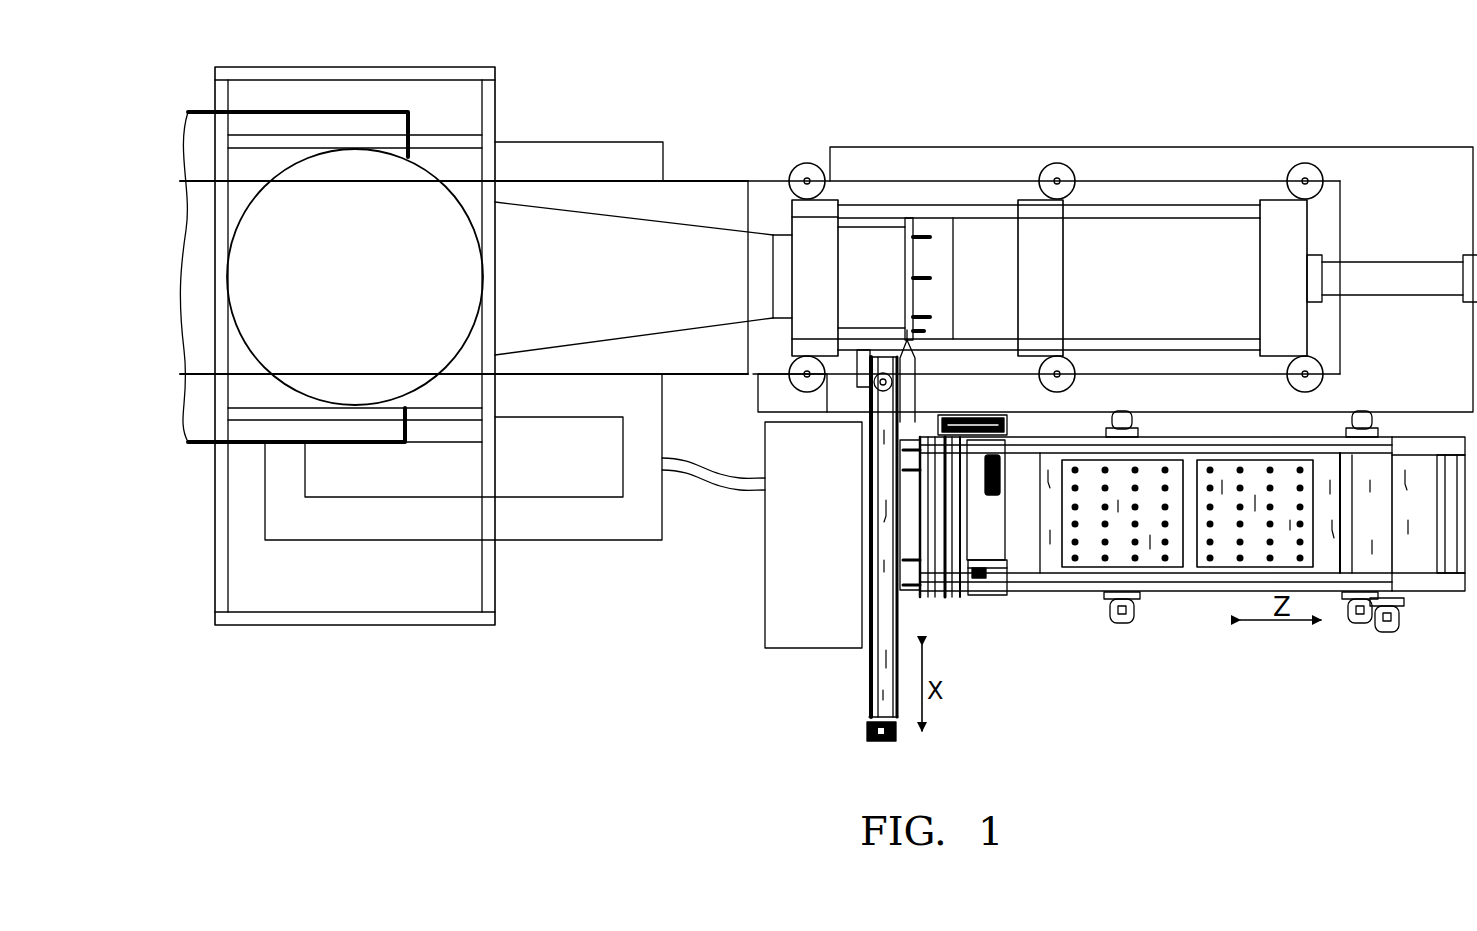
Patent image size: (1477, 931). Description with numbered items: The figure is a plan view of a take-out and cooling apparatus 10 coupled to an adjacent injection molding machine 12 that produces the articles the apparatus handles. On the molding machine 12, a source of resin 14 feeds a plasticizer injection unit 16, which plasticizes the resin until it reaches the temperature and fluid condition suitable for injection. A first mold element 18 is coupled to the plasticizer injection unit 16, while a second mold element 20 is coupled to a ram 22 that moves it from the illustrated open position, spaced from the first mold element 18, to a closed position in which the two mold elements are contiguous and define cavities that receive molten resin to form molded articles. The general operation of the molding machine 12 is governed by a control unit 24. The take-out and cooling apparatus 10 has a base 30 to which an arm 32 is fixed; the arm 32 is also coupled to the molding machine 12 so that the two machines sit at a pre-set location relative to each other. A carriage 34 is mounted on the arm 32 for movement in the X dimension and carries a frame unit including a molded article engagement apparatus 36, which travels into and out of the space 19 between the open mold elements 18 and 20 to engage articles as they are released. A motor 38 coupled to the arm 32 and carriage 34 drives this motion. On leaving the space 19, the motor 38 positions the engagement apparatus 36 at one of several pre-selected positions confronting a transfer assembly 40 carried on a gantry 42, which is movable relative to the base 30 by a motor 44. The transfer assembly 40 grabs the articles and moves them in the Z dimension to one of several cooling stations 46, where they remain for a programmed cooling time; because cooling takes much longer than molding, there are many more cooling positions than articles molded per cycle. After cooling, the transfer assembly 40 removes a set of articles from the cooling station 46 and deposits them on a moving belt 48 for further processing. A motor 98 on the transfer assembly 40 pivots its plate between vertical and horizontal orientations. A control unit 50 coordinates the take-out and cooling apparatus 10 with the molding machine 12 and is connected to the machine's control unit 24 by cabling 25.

The take-out and cooling apparatus 10 is at (757, 689).
The injection molding machine 12 is at (820, 118).
The source of resin 14 is at (422, 208).
The plasticizer injection unit 16 is at (588, 247).
The first mold element 18 is at (892, 242).
The space 19 is at (945, 292).
The second mold element 20 is at (990, 235).
The ram 22 is at (1135, 250).
The control unit 24 is at (585, 478).
The cabling 25 is at (727, 478).
The base 30 is at (1137, 597).
The arm 32 is at (882, 667).
The carriage 34 is at (912, 392).
The molded article engagement apparatus 36 is at (918, 232).
The motor 38 is at (882, 742).
The transfer assembly 40 is at (890, 493).
The gantry 42 is at (1030, 597).
The motor 44 is at (1390, 632).
The cooling stations 46 is at (1222, 550).
The moving belt 48 is at (1408, 560).
The control unit 50 is at (805, 592).
The motor 98 is at (968, 420).